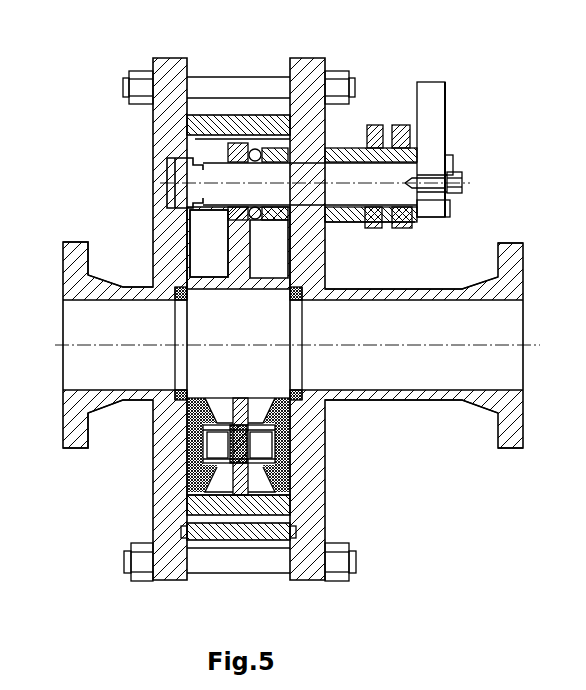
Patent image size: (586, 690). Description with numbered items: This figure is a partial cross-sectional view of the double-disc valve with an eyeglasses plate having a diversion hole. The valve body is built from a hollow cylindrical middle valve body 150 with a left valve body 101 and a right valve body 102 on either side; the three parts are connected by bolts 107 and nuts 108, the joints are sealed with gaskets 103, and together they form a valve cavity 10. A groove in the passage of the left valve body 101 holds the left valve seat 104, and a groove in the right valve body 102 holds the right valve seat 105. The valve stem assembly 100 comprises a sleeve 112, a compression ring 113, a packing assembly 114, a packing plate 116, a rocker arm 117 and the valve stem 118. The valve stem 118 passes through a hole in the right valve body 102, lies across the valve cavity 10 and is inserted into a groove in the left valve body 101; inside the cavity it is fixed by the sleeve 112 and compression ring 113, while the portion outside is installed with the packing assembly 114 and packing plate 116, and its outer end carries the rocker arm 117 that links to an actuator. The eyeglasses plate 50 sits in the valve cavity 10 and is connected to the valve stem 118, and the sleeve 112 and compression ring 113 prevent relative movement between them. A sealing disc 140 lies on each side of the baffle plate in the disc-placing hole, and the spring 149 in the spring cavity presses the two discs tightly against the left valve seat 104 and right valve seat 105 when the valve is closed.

The valve cavity 10 is at (152, 178).
The eyeglasses plate 50 is at (215, 240).
The valve stem assembly 100 is at (433, 170).
The left valve body 101 is at (153, 543).
The right valve body 102 is at (325, 488).
The gaskets 103 is at (192, 552).
The left valve seat 104 is at (187, 285).
The right valve seat 105 is at (327, 283).
The bolt 107 is at (356, 562).
The nut 108 is at (345, 541).
The sleeve 112 is at (152, 160).
The compression ring 113 is at (163, 103).
The packing assembly 114 is at (355, 150).
The packing plate 116 is at (443, 108).
The rocker arm 117 is at (435, 140).
The valve stem 118 is at (425, 208).
The sealing disc 140 is at (323, 441).
The spring 149 is at (190, 446).
The middle valve body 150 is at (262, 540).